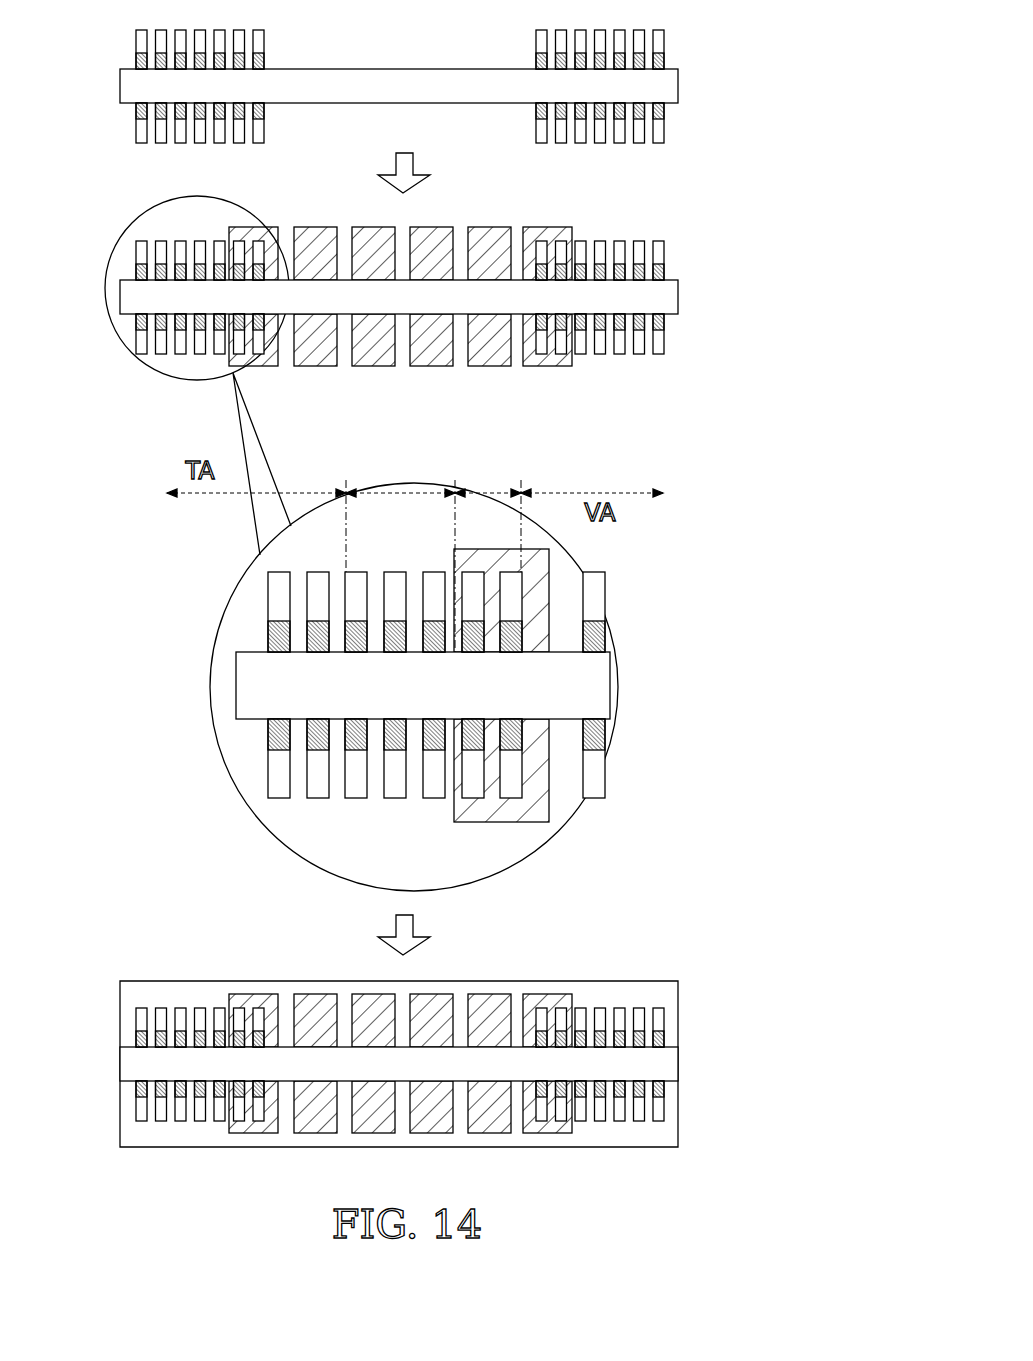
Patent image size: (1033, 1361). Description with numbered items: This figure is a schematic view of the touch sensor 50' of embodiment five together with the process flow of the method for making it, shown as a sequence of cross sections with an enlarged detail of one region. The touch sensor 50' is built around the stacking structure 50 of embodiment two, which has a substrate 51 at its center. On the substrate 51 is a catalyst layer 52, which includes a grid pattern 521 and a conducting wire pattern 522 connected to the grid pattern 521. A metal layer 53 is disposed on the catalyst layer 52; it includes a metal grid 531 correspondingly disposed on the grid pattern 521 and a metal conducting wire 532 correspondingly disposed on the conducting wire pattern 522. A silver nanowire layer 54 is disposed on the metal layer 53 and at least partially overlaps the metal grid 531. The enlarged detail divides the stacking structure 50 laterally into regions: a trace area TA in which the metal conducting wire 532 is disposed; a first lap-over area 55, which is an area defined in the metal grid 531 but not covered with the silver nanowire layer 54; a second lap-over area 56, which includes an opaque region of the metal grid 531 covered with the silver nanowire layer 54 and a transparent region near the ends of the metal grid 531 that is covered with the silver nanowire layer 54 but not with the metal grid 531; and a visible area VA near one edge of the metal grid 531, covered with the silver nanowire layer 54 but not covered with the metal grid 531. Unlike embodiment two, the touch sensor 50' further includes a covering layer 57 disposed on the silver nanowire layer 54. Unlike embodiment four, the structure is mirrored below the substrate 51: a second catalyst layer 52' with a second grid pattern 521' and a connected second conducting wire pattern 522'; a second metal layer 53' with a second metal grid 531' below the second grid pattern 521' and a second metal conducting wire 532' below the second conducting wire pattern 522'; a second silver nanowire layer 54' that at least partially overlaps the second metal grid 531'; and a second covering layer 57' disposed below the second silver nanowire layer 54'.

The stacking structure 50 is at (548, 443).
The touch sensor 50' is at (292, 1025).
The substrate 51 is at (663, 88).
The catalyst layer 52 is at (440, 549).
The second catalyst layer 52' is at (443, 605).
The metal layer 53 is at (440, 531).
The second metal layer 53' is at (443, 621).
The silver nanowire layer 54 is at (486, 618).
The second silver nanowire layer 54' is at (489, 752).
The first lap-over area 55 is at (400, 477).
The second lap-over area 56 is at (488, 477).
The covering layer 57 is at (432, 1010).
The second covering layer 57' is at (435, 1119).
The grid pattern 521 is at (433, 658).
The second grid pattern 521' is at (433, 717).
The conducting wire pattern 522 is at (233, 648).
The second conducting wire pattern 522' is at (230, 724).
The metal grid 531 is at (433, 583).
The second metal grid 531' is at (442, 798).
The metal conducting wire 532 is at (233, 612).
The second metal conducting wire 532' is at (230, 758).
The trace area TA is at (256, 477).
The visible area VA is at (592, 508).